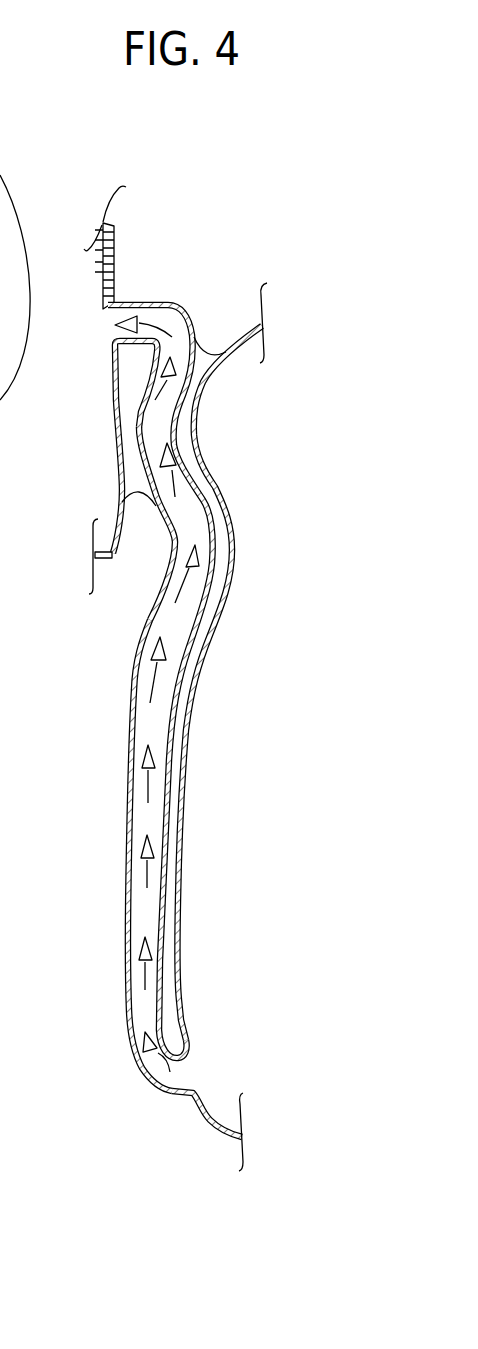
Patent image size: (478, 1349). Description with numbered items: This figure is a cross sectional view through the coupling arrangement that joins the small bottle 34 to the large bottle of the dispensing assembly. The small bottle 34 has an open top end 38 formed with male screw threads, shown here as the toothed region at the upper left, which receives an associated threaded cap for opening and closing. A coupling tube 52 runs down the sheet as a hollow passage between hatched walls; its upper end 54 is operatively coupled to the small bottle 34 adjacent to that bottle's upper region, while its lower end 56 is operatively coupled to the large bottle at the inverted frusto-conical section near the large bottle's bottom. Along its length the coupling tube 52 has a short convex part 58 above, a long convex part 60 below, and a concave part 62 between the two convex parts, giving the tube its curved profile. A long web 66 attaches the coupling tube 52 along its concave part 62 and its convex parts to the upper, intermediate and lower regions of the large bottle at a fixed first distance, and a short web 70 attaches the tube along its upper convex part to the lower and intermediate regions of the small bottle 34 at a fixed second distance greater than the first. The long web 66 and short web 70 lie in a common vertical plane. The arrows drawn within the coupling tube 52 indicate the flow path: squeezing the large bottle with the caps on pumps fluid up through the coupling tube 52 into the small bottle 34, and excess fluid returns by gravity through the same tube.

The small bottle 34 is at (112, 397).
The open top end 38 is at (115, 228).
The coupling tube 52 is at (145, 822).
The upper end 54 is at (179, 313).
The lower end 56 is at (158, 1090).
The short convex part 58 is at (130, 433).
The long convex part 60 is at (122, 995).
The concave part 62 is at (170, 552).
The long web 66 is at (202, 358).
The short web 70 is at (127, 362).